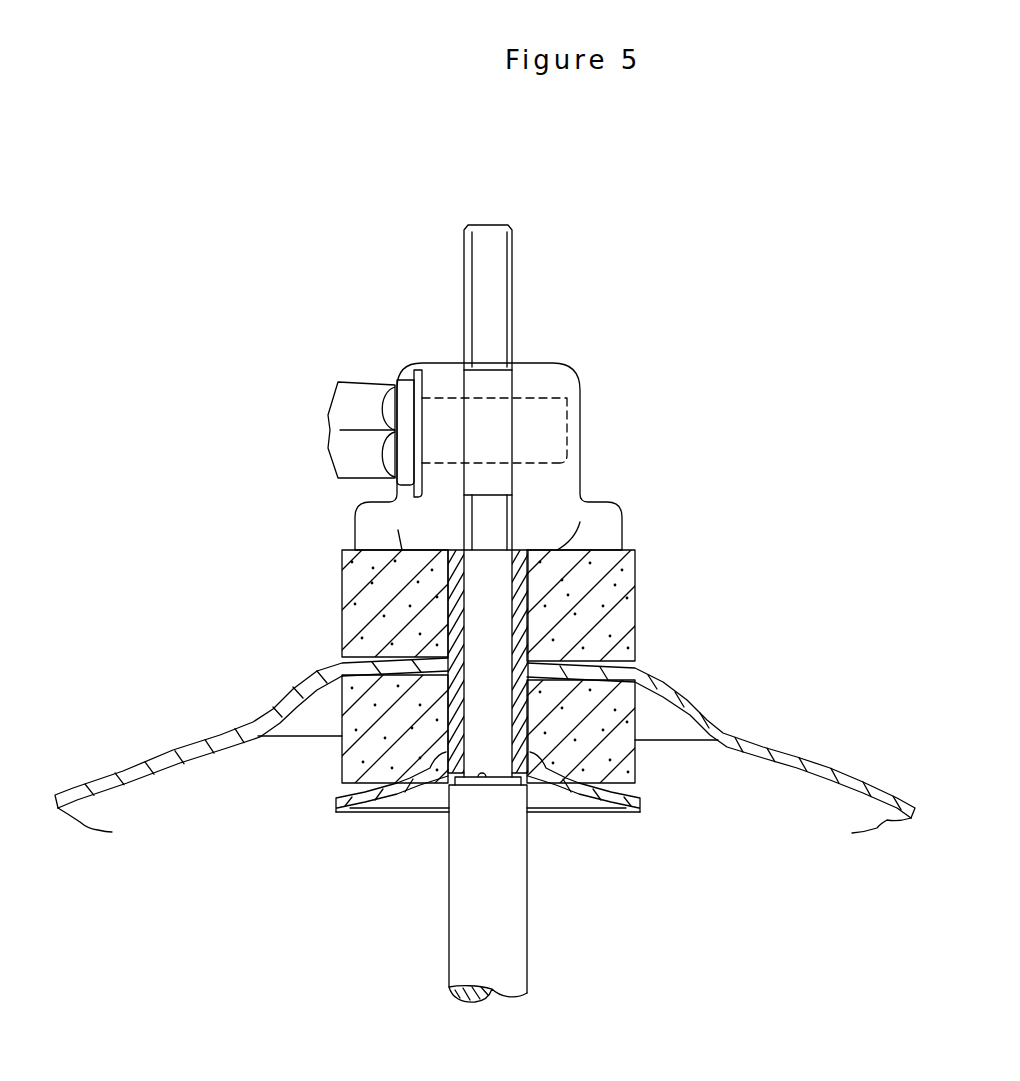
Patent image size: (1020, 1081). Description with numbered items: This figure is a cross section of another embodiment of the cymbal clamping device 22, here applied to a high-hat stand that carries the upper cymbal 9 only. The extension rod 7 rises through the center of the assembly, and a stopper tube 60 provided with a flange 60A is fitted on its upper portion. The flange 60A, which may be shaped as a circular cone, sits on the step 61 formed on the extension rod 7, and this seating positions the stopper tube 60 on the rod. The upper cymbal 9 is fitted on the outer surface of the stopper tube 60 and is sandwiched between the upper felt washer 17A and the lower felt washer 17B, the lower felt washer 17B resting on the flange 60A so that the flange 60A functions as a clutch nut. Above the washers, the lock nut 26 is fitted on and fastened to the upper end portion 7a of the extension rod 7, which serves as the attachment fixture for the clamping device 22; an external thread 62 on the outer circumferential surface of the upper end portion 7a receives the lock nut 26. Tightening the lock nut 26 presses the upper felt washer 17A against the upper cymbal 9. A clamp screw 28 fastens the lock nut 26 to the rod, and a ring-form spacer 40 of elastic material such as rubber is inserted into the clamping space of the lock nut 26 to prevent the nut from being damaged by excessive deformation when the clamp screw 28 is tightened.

The clamping device 22 is at (813, 457).
The lock nut 26 is at (606, 388).
The clamp screw 28 is at (345, 457).
The upper end portion of the extension rod 7a is at (465, 262).
The external thread 62 is at (507, 295).
The ring-form spacer 40 is at (488, 378).
The upper felt washer 17A is at (627, 612).
The lower felt washer 17B is at (635, 768).
The upper cymbal 9 is at (833, 767).
The stopper tube 60 is at (431, 786).
The flange 60A is at (607, 813).
The step 61 is at (478, 778).
The extension rod 7 is at (525, 945).